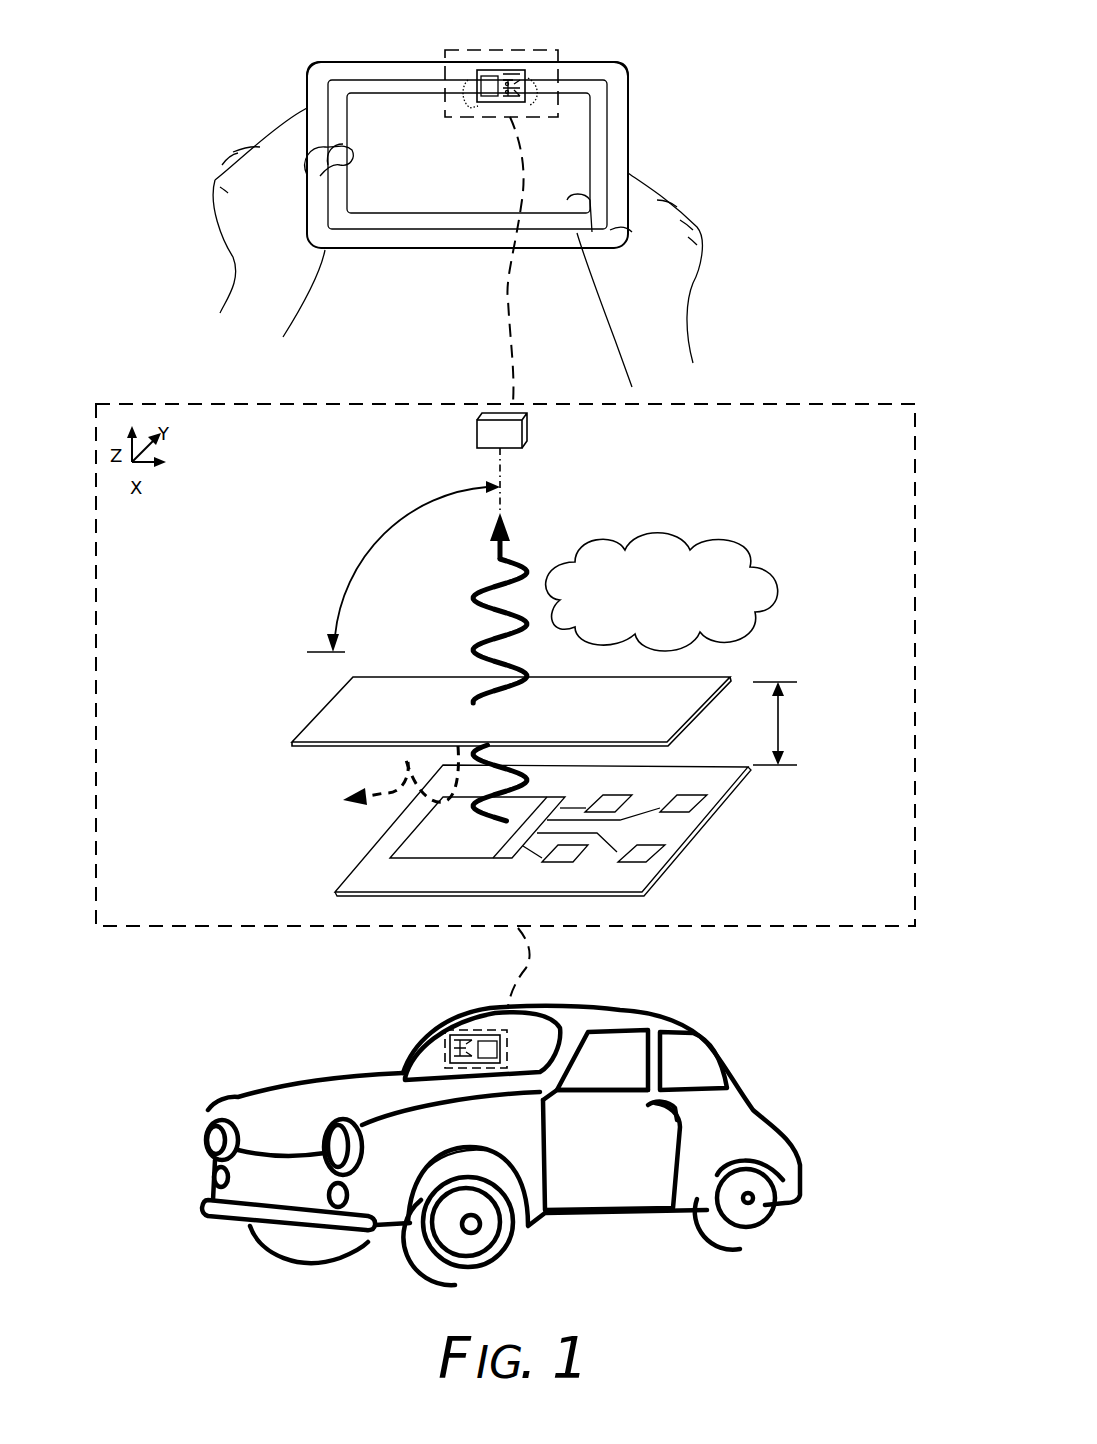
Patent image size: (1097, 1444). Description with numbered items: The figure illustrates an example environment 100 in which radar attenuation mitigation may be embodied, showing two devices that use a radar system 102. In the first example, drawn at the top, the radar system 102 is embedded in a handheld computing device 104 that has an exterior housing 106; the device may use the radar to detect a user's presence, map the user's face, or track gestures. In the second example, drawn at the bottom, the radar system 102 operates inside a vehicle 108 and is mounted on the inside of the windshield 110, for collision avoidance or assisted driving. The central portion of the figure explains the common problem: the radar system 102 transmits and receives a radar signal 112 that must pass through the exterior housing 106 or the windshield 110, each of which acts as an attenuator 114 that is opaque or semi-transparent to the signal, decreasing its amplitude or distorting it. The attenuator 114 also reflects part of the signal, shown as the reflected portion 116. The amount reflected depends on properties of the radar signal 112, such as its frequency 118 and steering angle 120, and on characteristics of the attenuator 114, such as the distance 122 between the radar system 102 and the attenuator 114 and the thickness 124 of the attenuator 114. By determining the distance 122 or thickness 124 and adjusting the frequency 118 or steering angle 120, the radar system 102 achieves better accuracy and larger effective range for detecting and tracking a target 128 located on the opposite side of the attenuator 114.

The example environment 100 is at (183, 36).
The radar system 102 is at (515, 72).
The computing device 104 is at (628, 93).
The exterior housing 106 is at (615, 173).
The vehicle 108 is at (690, 1023).
The windshield 110 is at (530, 1040).
The radar signal 112 is at (490, 641).
The attenuator 114 is at (327, 702).
The reflected portion 116 is at (393, 807).
The frequency 118 is at (678, 616).
The steering angle 120 is at (381, 566).
The distance 122 is at (778, 722).
The thickness 124 is at (275, 738).
The target 128 is at (524, 447).